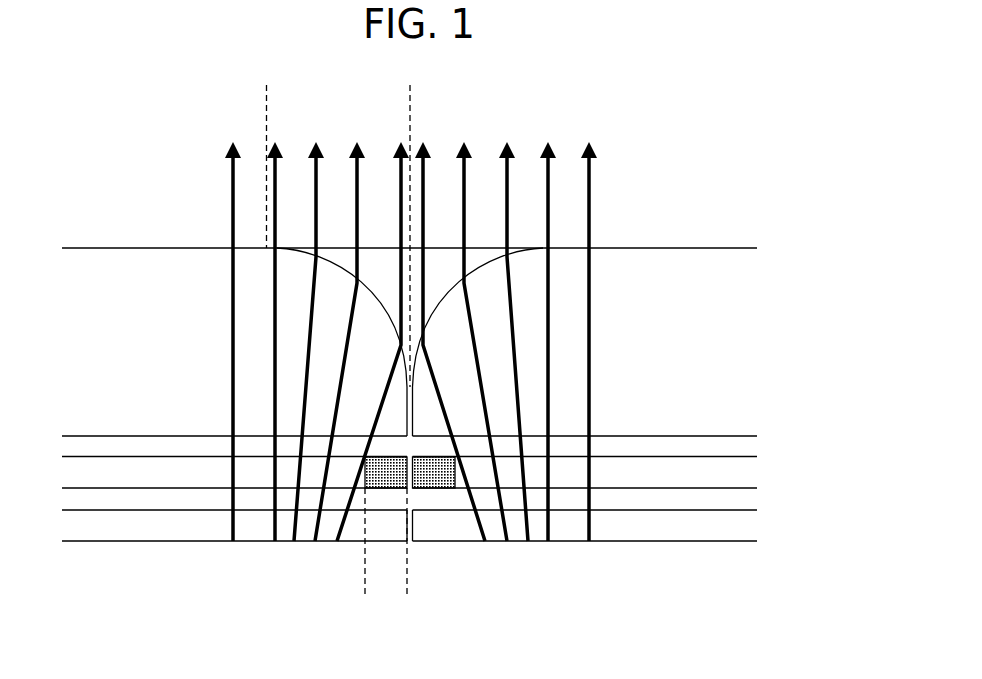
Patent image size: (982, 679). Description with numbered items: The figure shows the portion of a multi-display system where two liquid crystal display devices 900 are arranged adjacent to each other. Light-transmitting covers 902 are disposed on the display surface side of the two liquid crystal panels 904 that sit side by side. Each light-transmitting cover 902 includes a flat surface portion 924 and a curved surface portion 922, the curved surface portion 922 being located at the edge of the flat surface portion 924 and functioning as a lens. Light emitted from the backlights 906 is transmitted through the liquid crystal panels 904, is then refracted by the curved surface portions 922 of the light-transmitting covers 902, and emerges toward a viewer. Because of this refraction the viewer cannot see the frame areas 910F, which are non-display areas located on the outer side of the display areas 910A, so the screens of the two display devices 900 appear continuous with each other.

The liquid crystal display device 900 is at (463, 356).
The light-transmitting cover 902 is at (728, 334).
The liquid crystal panel 904 is at (742, 481).
The backlight 906 is at (738, 530).
The curved surface portion 922 is at (272, 110).
The flat surface portion 924 is at (263, 110).
The display area 910A is at (365, 593).
The frame area 910F is at (366, 593).